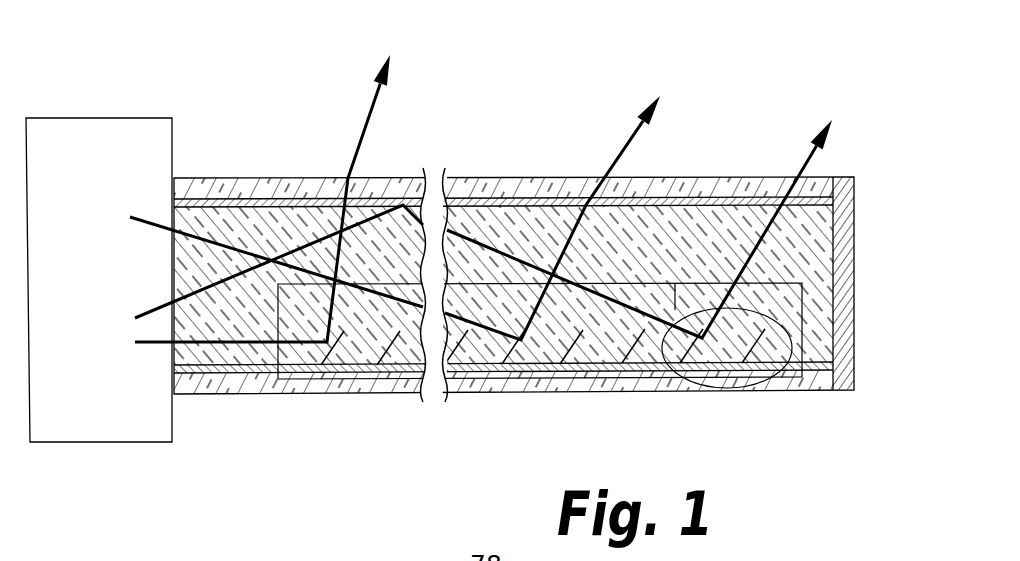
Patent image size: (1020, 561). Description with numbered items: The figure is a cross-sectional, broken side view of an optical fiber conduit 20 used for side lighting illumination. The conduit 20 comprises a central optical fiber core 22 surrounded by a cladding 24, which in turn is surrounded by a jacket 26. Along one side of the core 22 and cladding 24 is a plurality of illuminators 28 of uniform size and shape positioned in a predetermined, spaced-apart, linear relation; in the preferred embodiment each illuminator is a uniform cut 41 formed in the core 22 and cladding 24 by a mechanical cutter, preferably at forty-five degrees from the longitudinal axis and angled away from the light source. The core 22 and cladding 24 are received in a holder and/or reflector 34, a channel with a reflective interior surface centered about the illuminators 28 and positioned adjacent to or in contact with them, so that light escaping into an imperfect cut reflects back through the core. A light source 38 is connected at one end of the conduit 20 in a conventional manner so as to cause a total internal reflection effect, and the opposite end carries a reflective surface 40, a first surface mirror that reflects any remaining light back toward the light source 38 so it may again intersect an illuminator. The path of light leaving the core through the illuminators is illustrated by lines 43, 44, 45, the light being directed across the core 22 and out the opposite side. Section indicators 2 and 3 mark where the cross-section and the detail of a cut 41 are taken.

The optical fiber conduit 20 is at (842, 406).
The optical fiber core 22 is at (744, 189).
The cladding 24 is at (700, 196).
The jacket 26 is at (668, 393).
The illuminator 28 is at (492, 411).
The holder and/or reflector 34 is at (516, 380).
The light source 38 is at (104, 434).
The reflective surface 40 is at (855, 215).
The cut 41 is at (327, 394).
The light path line 43 is at (375, 112).
The light path line 44 is at (633, 126).
The light path line 45 is at (818, 132).
The section line 2- 2 is at (632, 290).
The detail region 3 is at (712, 319).